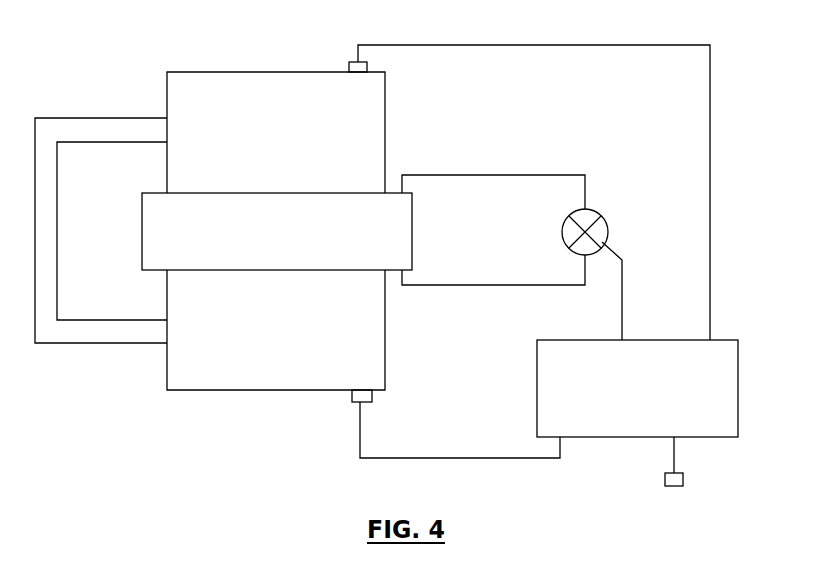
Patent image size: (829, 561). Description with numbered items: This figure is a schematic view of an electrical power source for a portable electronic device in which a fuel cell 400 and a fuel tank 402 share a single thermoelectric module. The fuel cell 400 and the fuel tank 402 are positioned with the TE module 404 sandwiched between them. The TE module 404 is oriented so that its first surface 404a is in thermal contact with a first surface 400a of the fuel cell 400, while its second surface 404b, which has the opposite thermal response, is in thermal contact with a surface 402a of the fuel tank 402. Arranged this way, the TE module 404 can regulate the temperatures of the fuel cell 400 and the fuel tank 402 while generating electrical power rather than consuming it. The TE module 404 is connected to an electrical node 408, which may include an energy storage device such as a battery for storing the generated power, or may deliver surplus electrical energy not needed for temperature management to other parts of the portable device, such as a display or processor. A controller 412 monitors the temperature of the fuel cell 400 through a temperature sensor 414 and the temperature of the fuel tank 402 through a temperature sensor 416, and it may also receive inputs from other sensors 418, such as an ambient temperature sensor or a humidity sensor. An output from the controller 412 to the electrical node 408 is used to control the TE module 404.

The fuel cell 400 is at (367, 115).
The fuel tank 402 is at (370, 350).
The TE module 404 is at (163, 242).
The first surface of the TE module 404a is at (217, 193).
The surface of the fuel tank 402a is at (327, 270).
The first surface of the fuel cell 400a is at (192, 193).
The second surface of the TE module 404b is at (237, 270).
The electrical node 408 is at (605, 234).
The controller 412 is at (720, 408).
The temperature sensor 414 is at (350, 63).
The temperature sensor 416 is at (350, 398).
The other sensors 418 is at (675, 482).